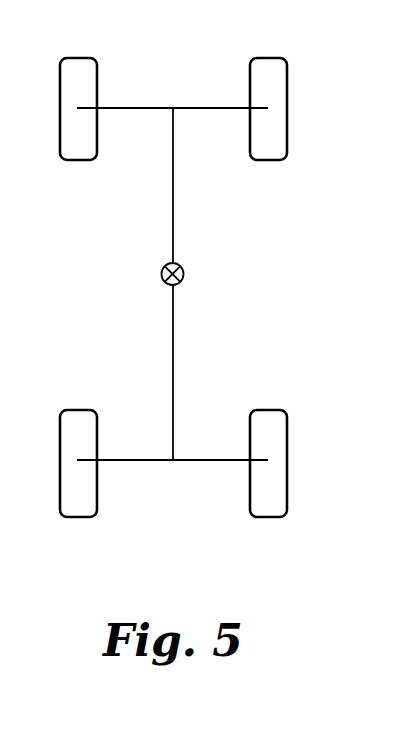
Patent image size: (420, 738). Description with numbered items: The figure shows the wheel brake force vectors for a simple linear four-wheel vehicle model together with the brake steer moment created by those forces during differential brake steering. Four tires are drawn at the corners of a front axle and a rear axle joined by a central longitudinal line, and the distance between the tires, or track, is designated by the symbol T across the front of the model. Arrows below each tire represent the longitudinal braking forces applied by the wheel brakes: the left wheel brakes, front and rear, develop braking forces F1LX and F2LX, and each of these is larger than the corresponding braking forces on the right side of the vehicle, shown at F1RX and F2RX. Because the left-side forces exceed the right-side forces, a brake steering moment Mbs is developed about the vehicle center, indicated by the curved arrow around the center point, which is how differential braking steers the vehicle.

The track T is at (270, 47).
The front left wheel braking force F1LX is at (78, 160).
The front right wheel braking force F1RX is at (267, 160).
The rear left wheel braking force F2LX is at (78, 517).
The rear right wheel braking force F2RX is at (267, 517).
The brake steering moment Mbs is at (187, 322).